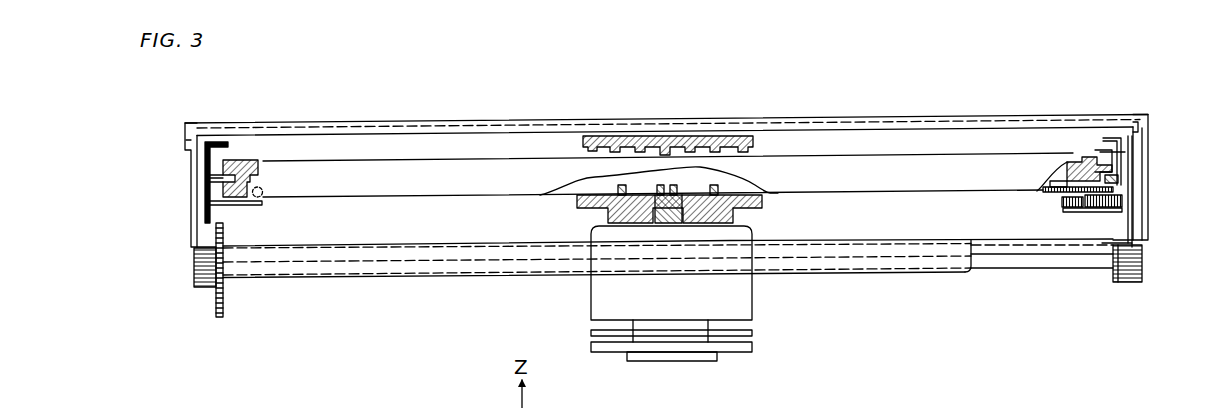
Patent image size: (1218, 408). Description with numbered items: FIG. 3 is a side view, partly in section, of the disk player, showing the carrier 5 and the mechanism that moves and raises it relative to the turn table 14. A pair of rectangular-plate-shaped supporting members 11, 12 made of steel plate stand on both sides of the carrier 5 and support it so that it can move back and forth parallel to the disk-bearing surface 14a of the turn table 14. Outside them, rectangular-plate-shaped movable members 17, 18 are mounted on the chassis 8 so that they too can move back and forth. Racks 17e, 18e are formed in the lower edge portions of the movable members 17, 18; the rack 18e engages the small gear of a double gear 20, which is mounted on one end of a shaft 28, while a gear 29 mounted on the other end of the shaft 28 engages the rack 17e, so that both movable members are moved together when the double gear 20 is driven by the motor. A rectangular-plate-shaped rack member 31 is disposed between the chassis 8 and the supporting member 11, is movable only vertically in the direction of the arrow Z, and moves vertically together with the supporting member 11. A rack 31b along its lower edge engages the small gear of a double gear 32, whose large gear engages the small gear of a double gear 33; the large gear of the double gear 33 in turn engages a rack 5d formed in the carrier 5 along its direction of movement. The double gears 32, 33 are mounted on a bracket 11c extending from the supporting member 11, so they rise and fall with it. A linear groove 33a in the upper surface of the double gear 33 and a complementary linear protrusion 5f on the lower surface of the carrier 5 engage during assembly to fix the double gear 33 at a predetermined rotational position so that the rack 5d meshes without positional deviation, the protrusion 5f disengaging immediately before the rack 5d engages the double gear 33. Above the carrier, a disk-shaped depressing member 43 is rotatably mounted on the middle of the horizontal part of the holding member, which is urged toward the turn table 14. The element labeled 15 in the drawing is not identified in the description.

The carrier 5 is at (918, 152).
The rack 5d is at (1110, 187).
The linear protrusion 5f is at (1075, 160).
The chassis 8 is at (225, 231).
The supporting member 11 is at (1098, 158).
The bracket 11c is at (1070, 213).
The supporting member 12 is at (212, 156).
The turn table 14 is at (597, 213).
The disk-bearing surface 14a is at (577, 192).
The bearing 15 is at (232, 168).
The movable member 17 is at (1140, 152).
The rack 17e is at (1142, 240).
The movable member 18 is at (193, 167).
The rack 18e is at (191, 247).
The double gear 20 is at (208, 292).
The shaft 28 is at (990, 260).
The gear 29 is at (1128, 280).
The rack member 31 is at (1117, 166).
The rack 31b is at (1127, 195).
The double gear 32 is at (1087, 213).
The double gear 33 is at (1060, 197).
The linear groove 33a is at (1070, 160).
The depressing member 43 is at (762, 141).